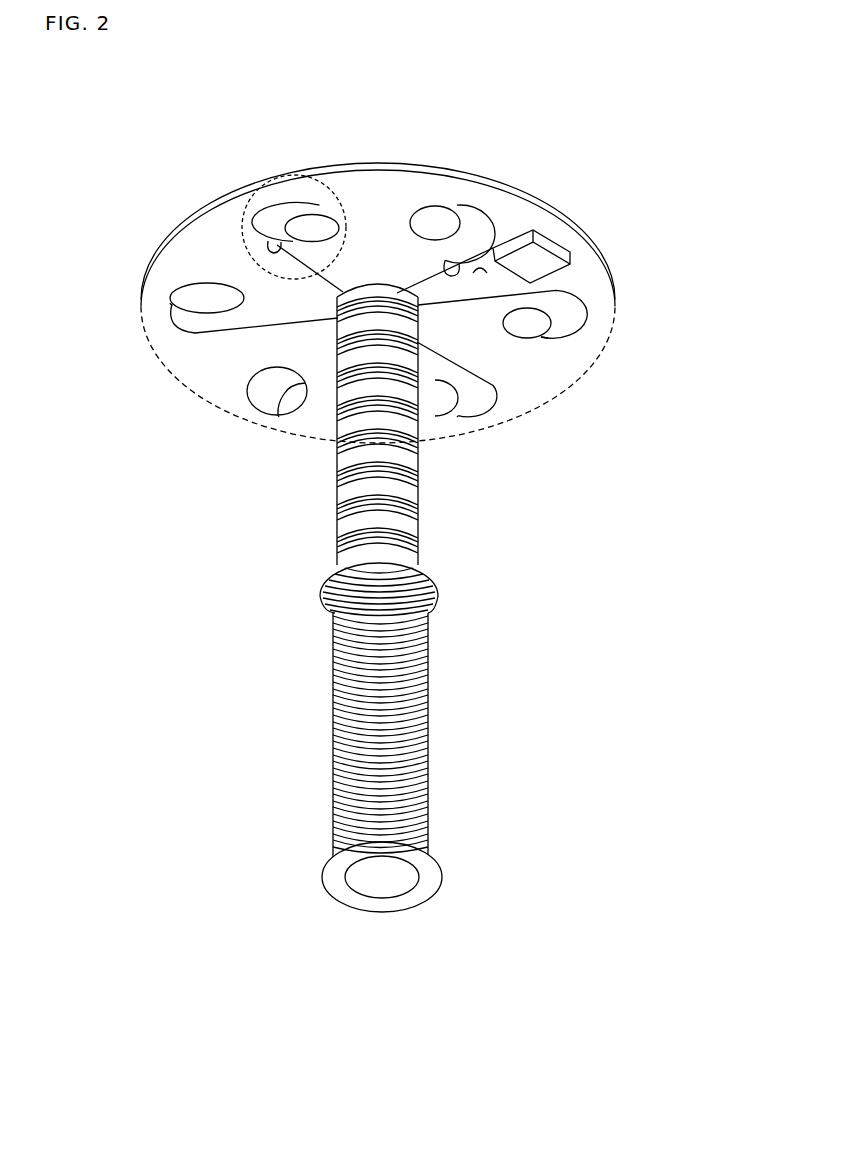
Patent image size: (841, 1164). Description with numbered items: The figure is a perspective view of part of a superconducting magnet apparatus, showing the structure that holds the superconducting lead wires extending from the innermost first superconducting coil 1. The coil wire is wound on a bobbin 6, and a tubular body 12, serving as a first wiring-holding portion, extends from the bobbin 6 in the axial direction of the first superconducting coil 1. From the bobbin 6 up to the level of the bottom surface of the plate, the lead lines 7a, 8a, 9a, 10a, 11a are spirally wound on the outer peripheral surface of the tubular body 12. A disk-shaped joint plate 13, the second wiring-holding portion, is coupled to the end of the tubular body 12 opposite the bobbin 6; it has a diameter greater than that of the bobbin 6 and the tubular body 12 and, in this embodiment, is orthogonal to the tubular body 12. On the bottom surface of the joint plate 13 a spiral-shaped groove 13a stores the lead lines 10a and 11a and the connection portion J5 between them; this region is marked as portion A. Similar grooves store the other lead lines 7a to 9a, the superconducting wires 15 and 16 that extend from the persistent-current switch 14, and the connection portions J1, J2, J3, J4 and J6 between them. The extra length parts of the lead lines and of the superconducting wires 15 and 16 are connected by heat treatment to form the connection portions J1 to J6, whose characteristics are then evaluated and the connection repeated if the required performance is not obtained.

The first superconducting coil 1 is at (433, 708).
The bobbin 6 is at (446, 896).
The lead line 7a is at (495, 406).
The lead line 8a is at (247, 400).
The lead line 9a is at (200, 285).
The lead line 10a is at (263, 209).
The lead line 11a is at (418, 206).
The tubular body 12 is at (350, 528).
The joint plate 13 is at (530, 197).
The spiral-shaped groove 13a is at (275, 254).
The persistent-current switch 14 is at (560, 247).
The superconducting wire 15 is at (586, 316).
The superconducting wire 16 is at (441, 268).
The connection portion J1 is at (555, 337).
The connection portion J2 is at (457, 413).
The connection portion J3 is at (278, 415).
The connection portion J4 is at (170, 305).
The connection portion J5 is at (303, 204).
The connection portion J6 is at (453, 203).
The portion A is at (337, 187).